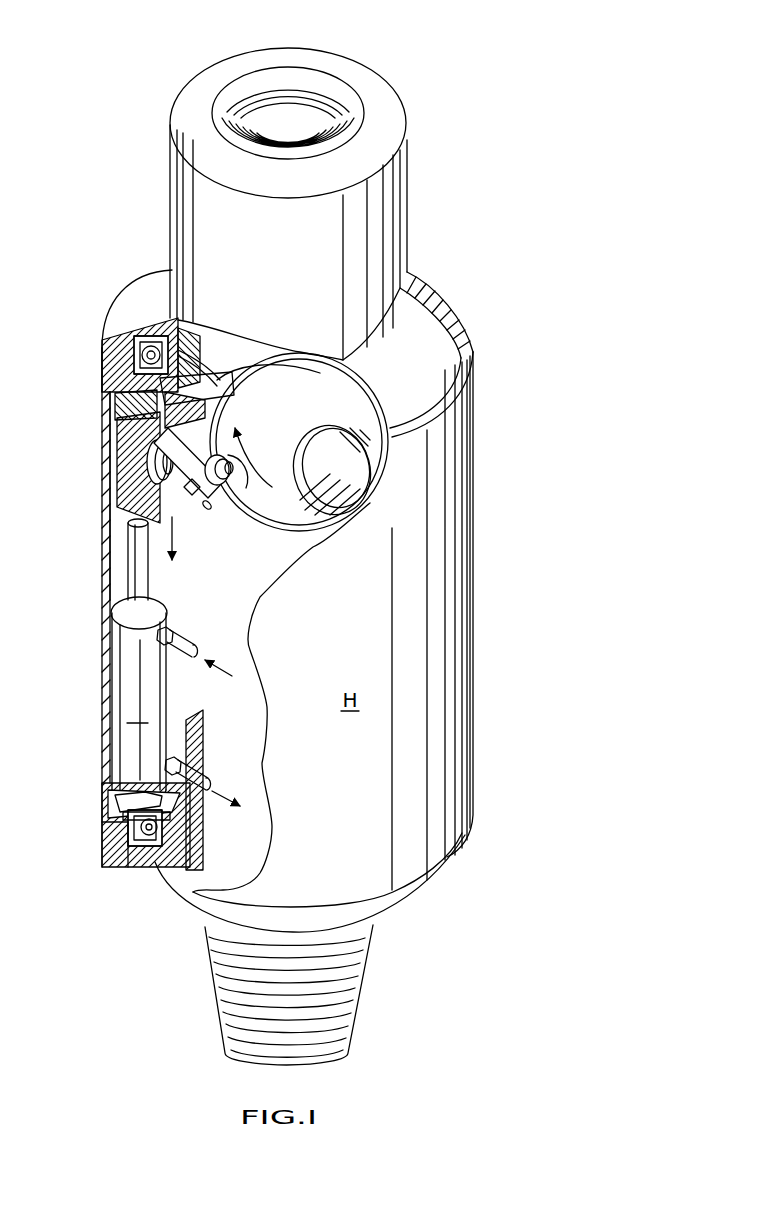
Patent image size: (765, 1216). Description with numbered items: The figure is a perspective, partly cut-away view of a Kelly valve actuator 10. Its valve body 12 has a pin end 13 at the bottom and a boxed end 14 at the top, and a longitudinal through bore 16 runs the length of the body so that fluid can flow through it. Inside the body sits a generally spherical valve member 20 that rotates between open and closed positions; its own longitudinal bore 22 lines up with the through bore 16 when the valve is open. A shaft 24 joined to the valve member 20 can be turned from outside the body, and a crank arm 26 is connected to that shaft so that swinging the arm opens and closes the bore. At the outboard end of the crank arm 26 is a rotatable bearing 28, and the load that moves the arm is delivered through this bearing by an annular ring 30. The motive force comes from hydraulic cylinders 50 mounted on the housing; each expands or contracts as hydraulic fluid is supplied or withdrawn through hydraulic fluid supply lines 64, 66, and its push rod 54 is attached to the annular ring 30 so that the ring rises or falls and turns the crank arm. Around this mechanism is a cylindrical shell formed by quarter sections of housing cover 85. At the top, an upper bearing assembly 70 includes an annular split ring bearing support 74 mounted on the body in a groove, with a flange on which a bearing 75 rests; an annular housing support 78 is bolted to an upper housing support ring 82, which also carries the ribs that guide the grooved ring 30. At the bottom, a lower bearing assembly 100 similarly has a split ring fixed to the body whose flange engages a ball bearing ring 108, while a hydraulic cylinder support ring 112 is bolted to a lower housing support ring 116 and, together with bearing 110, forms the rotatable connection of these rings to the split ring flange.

The Kelly valve actuator 10 is at (467, 246).
The valve body 12 is at (388, 262).
The pin end 13 is at (367, 984).
The boxed end 14 is at (323, 100).
The longitudinal through bore 16 is at (268, 107).
The spherical valve member 20 is at (343, 390).
The longitudinal bore 22 is at (343, 483).
The shaft 24 is at (233, 488).
The crank arm 26 is at (177, 480).
The bearing 28 is at (150, 483).
The annular ring 30 is at (128, 450).
The hydraulic cylinder 50 is at (139, 697).
The push rod 54 is at (145, 572).
The hydraulic fluid supply line 64 is at (207, 780).
The hydraulic fluid supply line 66 is at (180, 640).
The upper bearing assembly 70 is at (95, 338).
The annular split ring bearing support 74 is at (183, 347).
The bearing 75 is at (140, 332).
The annular housing support 78 is at (112, 368).
The upper housing support ring 82 is at (128, 402).
The housing cover 85 is at (103, 580).
The lower bearing assembly 100 is at (116, 874).
The ball bearing ring 108 is at (145, 840).
The bearing 110 is at (113, 790).
The hydraulic cylinder support ring 112 is at (123, 820).
The lower housing support ring 116 is at (112, 845).